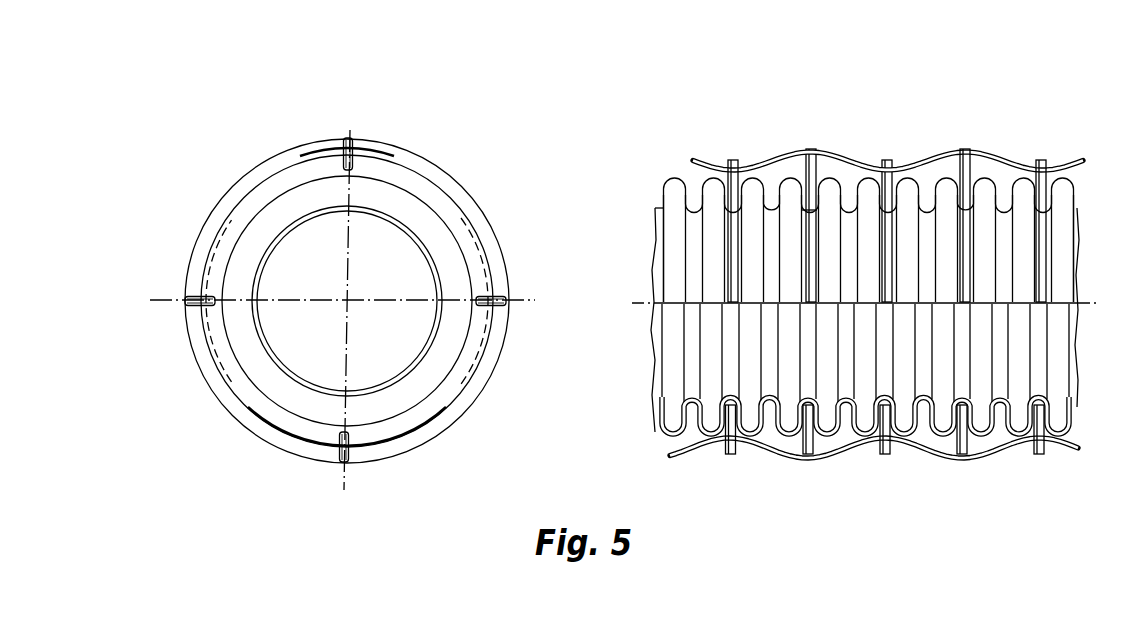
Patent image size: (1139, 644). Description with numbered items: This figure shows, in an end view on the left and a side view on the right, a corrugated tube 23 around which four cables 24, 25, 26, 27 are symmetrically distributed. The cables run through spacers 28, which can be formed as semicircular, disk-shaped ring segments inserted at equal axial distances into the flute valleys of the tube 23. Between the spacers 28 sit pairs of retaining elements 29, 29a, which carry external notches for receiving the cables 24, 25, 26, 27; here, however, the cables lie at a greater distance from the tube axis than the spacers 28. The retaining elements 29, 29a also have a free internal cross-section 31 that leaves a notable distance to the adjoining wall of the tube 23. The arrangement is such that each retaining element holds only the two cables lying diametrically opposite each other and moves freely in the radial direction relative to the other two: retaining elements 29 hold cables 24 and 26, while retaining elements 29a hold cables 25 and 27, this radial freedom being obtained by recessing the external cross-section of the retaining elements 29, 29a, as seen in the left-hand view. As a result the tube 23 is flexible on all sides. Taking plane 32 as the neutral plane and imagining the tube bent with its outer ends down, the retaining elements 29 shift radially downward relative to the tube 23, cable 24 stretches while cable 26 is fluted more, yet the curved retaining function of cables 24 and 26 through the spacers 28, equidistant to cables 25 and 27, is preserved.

The corrugated tube 23 is at (413, 387).
The cable 24 is at (357, 148).
The cable 25 is at (193, 294).
The cable 26 is at (348, 453).
The cable 27 is at (494, 313).
The spacer 28 is at (428, 197).
The retaining element 29 is at (324, 150).
The retaining element 29a is at (195, 334).
The free internal cross-section 31 is at (797, 437).
The plane 32 is at (296, 300).